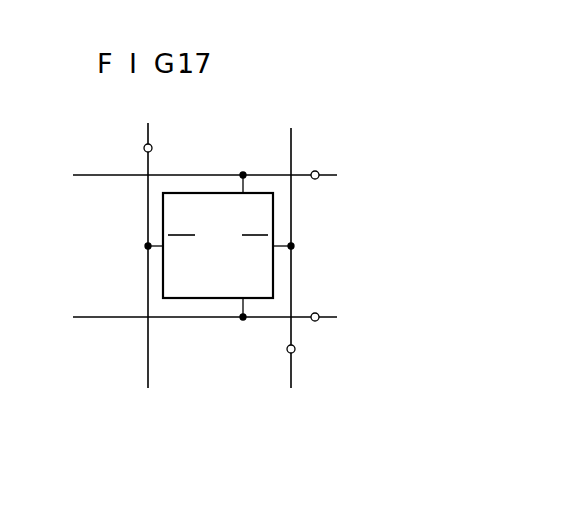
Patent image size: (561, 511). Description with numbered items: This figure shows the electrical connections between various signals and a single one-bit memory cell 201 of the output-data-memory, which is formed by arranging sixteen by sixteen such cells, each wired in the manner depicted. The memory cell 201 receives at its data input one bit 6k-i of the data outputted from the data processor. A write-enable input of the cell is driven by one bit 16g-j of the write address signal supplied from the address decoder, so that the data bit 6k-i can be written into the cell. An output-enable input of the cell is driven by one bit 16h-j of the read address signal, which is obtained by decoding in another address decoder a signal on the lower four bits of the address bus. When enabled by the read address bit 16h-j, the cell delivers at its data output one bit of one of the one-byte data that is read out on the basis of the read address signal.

The 1-bit memory cell 201 is at (208, 298).
The write address signal bit 16g-j is at (152, 146).
The data bit 6k-i is at (316, 179).
The read address signal bit 16h-j is at (295, 348).